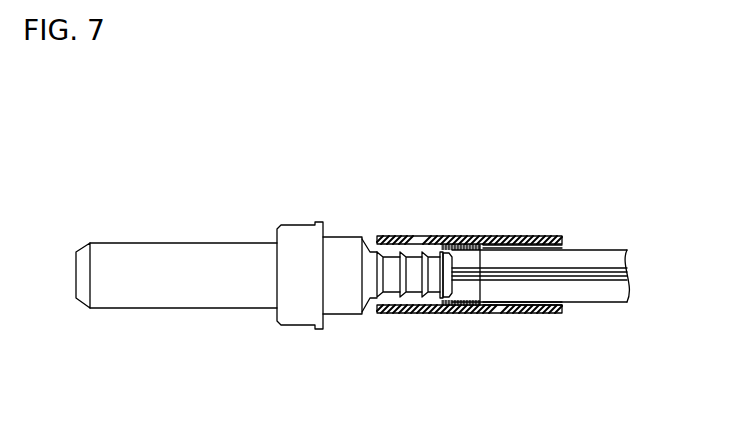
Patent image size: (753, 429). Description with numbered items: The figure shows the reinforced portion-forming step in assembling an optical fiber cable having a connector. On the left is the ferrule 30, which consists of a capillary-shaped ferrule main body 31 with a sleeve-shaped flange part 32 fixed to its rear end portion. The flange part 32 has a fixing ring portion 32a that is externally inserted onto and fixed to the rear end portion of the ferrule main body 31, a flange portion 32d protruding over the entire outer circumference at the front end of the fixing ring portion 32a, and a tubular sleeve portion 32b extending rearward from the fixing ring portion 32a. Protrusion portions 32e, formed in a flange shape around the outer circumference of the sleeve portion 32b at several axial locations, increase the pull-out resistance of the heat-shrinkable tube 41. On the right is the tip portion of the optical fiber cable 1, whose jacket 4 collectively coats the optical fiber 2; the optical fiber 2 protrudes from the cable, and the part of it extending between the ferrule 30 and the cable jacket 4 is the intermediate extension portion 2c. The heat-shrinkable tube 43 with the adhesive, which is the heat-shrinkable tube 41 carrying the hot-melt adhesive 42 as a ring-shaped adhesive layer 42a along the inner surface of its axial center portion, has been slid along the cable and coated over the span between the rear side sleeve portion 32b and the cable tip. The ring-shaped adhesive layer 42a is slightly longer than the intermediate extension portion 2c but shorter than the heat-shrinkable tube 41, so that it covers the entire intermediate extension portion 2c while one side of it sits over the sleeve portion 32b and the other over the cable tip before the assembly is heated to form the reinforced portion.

The ferrule 30 is at (193, 241).
The ferrule main body 31 is at (175, 295).
The flange part 32 is at (352, 235).
The fixing ring portion 32a is at (345, 310).
The sleeve portion 32b is at (416, 258).
The flange portion 32d is at (295, 320).
The protrusion portion 32e is at (422, 250).
The heat-shrinkable tube 41 is at (400, 236).
The hot-melt adhesive 42 is at (469, 303).
The ring-shaped adhesive layer 42a is at (486, 341).
The heat-shrinkable tube with the adhesive 43 is at (512, 236).
The jacket 4 is at (570, 267).
The optical fiber cable 1 is at (600, 248).
The optical fiber 2 is at (470, 280).
The intermediate extension portion 2c is at (539, 321).